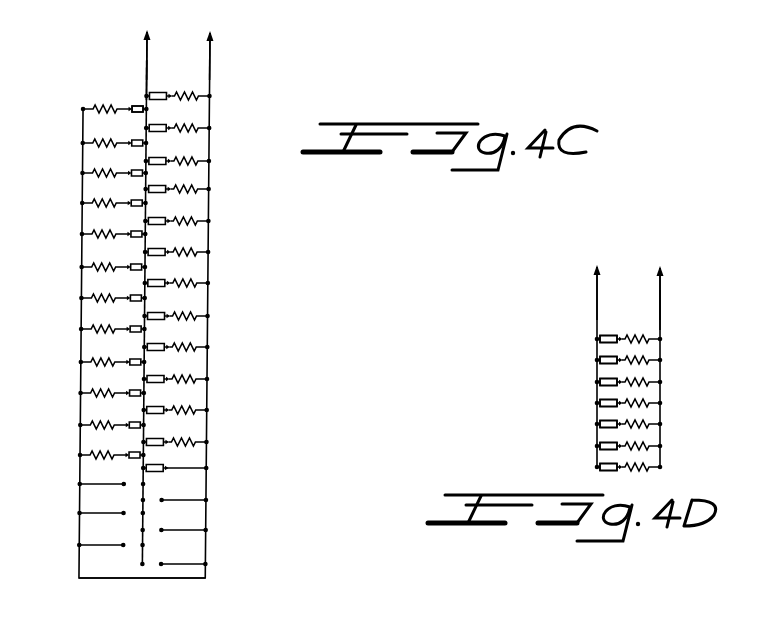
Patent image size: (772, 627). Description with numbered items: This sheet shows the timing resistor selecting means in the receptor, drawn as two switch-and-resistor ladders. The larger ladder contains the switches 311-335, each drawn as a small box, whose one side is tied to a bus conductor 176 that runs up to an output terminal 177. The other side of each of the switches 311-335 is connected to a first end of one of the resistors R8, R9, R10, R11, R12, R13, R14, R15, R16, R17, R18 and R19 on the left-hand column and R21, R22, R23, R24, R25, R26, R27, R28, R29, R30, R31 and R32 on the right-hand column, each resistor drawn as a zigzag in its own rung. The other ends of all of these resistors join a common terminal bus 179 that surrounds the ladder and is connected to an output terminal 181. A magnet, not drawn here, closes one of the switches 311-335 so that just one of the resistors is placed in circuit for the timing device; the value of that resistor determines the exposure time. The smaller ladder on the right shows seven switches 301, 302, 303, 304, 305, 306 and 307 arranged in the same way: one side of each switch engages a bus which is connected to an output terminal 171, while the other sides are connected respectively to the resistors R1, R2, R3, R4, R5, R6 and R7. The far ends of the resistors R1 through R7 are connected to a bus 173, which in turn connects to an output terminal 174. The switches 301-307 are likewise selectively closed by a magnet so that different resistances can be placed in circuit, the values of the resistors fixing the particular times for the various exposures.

In FIG. 4C, the output terminal 177 is at (149, 34).
In FIG. 4C, the output terminal 181 is at (213, 38).
In FIG. 4C, the bus conductor 176 is at (199, 56).
In FIG. 4C, the common terminal bus 179 is at (146, 579).
In FIG. 4C, the switches 311-335 is at (130, 91).
In FIG. 4C, the resistor R8 is at (101, 105).
In FIG. 4C, the resistor R9 is at (94, 143).
In FIG. 4C, the resistor R10 is at (94, 173).
In FIG. 4C, the resistor R11 is at (94, 203).
In FIG. 4C, the resistor R12 is at (94, 234).
In FIG. 4C, the resistor R13 is at (94, 267).
In FIG. 4C, the resistor R14 is at (94, 298).
In FIG. 4C, the resistor R15 is at (94, 329).
In FIG. 4C, the resistor R16 is at (94, 362).
In FIG. 4C, the resistor R17 is at (94, 393).
In FIG. 4C, the resistor R18 is at (94, 425).
In FIG. 4C, the resistor R19 is at (94, 455).
In FIG. 4C, the resistor R21 is at (196, 94).
In FIG. 4C, the resistor R22 is at (196, 126).
In FIG. 4C, the resistor R23 is at (196, 159).
In FIG. 4C, the resistor R24 is at (196, 187).
In FIG. 4C, the resistor R25 is at (196, 219).
In FIG. 4C, the resistor R26 is at (196, 250).
In FIG. 4C, the resistor R27 is at (196, 281).
In FIG. 4C, the resistor R28 is at (196, 314).
In FIG. 4C, the resistor R29 is at (196, 345).
In FIG. 4C, the resistor R30 is at (196, 377).
In FIG. 4C, the resistor R31 is at (196, 408).
In FIG. 4C, the resistor R32 is at (196, 440).
In FIG. 4D, the output terminal 171 is at (600, 266).
In FIG. 4D, the output terminal 174 is at (664, 270).
In FIG. 4D, the bus 173 is at (662, 299).
In FIG. 4D, the resistor R1 is at (645, 336).
In FIG. 4D, the resistor R2 is at (645, 357).
In FIG. 4D, the resistor R3 is at (645, 379).
In FIG. 4D, the resistor R4 is at (645, 400).
In FIG. 4D, the resistor R5 is at (645, 421).
In FIG. 4D, the resistor R6 is at (645, 443).
In FIG. 4D, the resistor R7 is at (645, 464).
In FIG. 4D, the switch 301 is at (601, 335).
In FIG. 4D, the switch 302 is at (601, 357).
In FIG. 4D, the switch 303 is at (601, 380).
In FIG. 4D, the switch 304 is at (601, 402).
In FIG. 4D, the switch 305 is at (601, 423).
In FIG. 4D, the switch 306 is at (601, 446).
In FIG. 4D, the switch 307 is at (601, 467).